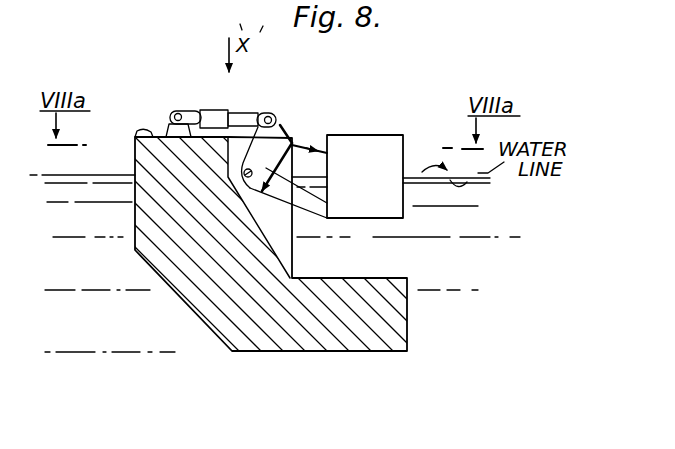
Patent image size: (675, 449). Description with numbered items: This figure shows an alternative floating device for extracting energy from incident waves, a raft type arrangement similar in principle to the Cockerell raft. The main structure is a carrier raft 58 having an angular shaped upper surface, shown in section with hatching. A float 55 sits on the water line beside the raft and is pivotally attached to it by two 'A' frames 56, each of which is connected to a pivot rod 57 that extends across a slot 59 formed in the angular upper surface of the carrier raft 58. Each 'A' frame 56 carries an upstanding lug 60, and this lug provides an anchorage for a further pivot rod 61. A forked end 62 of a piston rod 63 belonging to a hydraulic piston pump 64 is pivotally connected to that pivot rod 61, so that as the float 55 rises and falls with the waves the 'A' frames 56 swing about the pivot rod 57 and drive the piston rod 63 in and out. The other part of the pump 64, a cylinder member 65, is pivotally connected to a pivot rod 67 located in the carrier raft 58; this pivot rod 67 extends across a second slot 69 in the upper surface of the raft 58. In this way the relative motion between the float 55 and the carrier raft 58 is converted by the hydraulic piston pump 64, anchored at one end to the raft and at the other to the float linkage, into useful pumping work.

The float 55 is at (400, 152).
The 'A' frame 56 is at (330, 153).
The pivot rod 57 is at (250, 168).
The carrier raft 58 is at (406, 284).
The slot 59 is at (285, 224).
The upstanding lug 60 is at (291, 134).
The pivot rod 61 is at (277, 121).
The forked end 62 is at (269, 114).
The piston rod 63 is at (243, 113).
The hydraulic piston pump 64 is at (202, 106).
The cylinder member 65 is at (197, 108).
The pivot rod 67 is at (170, 116).
The slot 69 is at (140, 132).